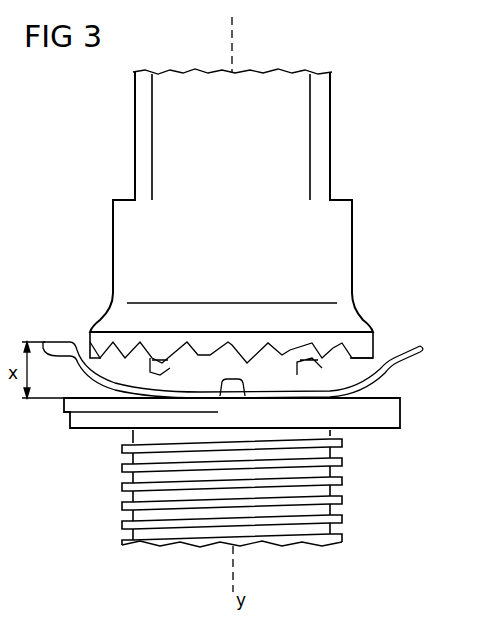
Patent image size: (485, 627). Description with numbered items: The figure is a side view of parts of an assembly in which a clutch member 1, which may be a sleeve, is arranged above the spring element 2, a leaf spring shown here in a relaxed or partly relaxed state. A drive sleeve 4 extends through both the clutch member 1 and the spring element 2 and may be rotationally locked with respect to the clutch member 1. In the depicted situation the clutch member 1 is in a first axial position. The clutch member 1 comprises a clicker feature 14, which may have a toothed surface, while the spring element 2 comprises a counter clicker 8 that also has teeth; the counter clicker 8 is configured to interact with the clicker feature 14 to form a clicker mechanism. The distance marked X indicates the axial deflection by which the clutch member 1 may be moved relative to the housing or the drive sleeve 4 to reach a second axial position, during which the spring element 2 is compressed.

The clutch member 1 is at (280, 126).
The spring element 2 is at (60, 344).
The clicker feature 14 is at (243, 363).
The counter clicker 8 is at (233, 388).
The drive sleeve 4 is at (315, 500).